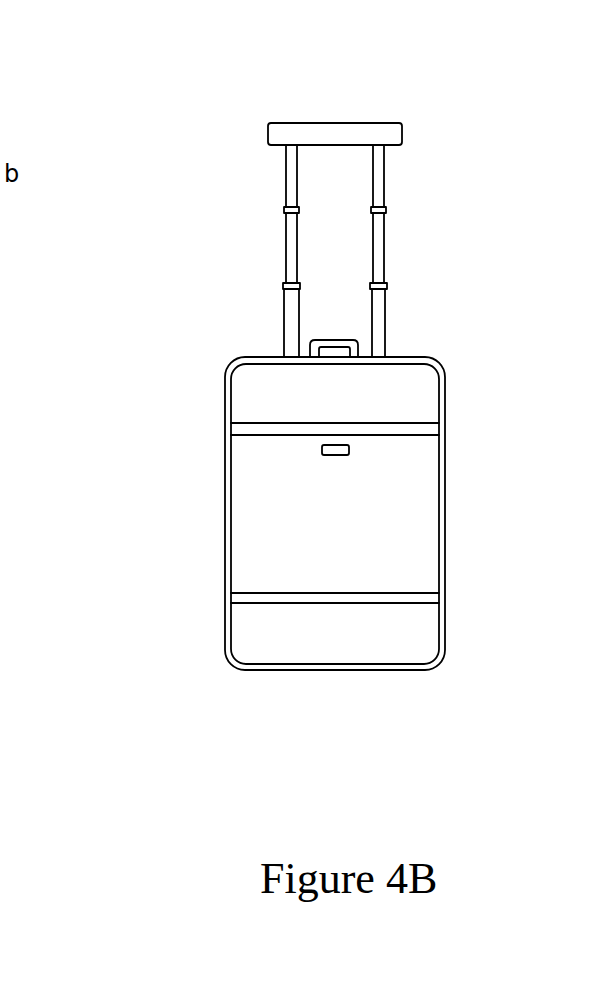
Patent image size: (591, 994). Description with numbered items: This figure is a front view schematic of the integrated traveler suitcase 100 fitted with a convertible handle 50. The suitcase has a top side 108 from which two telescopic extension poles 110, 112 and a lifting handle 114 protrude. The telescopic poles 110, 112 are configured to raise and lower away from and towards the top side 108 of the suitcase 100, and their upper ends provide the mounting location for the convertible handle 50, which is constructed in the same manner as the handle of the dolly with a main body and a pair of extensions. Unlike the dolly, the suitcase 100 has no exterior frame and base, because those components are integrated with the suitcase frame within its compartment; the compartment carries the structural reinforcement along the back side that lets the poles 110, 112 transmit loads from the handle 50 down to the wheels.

The convertible handle 50 is at (365, 108).
The integrated traveler suitcase 100 is at (165, 492).
The top side 108 is at (258, 355).
The telescopic extension pole 110 is at (288, 248).
The telescopic extension pole 112 is at (382, 245).
The lifting handle 114 is at (358, 342).